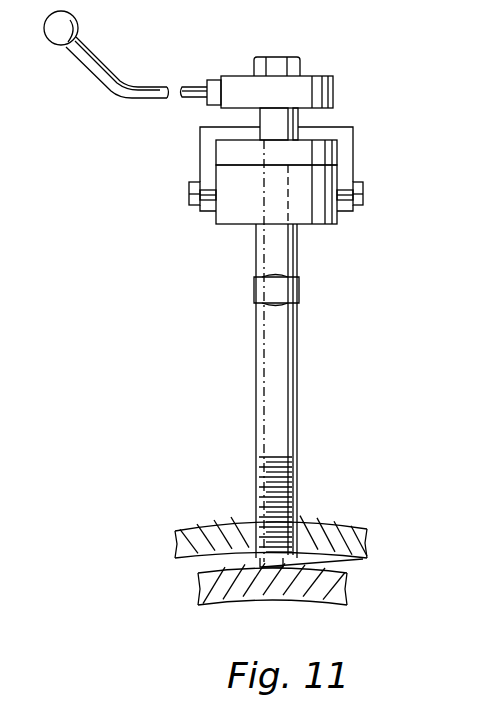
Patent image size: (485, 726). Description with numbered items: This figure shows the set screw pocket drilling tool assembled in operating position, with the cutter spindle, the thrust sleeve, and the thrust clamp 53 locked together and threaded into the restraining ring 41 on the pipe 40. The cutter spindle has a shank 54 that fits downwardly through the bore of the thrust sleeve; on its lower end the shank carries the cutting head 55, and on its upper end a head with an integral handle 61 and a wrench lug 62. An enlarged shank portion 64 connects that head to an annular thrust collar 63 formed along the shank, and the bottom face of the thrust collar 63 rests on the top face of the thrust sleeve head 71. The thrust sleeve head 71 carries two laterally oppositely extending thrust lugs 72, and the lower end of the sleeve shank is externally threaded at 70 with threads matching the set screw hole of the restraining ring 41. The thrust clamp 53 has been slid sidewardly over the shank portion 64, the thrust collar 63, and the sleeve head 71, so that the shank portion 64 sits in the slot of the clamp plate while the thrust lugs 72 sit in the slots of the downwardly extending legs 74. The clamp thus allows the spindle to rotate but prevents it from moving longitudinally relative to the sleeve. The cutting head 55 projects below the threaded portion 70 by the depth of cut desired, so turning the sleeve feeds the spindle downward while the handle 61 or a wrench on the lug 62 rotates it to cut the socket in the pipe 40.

The handle 61 is at (90, 60).
The wrench lug 62 is at (275, 65).
The enlarged shank portion 64 is at (260, 115).
The thrust clamp 53 is at (343, 125).
The thrust collar 63 is at (237, 149).
The legs 74 is at (208, 165).
The thrust sleeve head 71 is at (237, 222).
The thrust lugs 72 is at (190, 191).
The shank 54 is at (263, 376).
The threaded portion 70 is at (294, 483).
The restraining ring 41 is at (359, 545).
The cutting head 55 is at (362, 560).
The pipe 40 is at (207, 590).